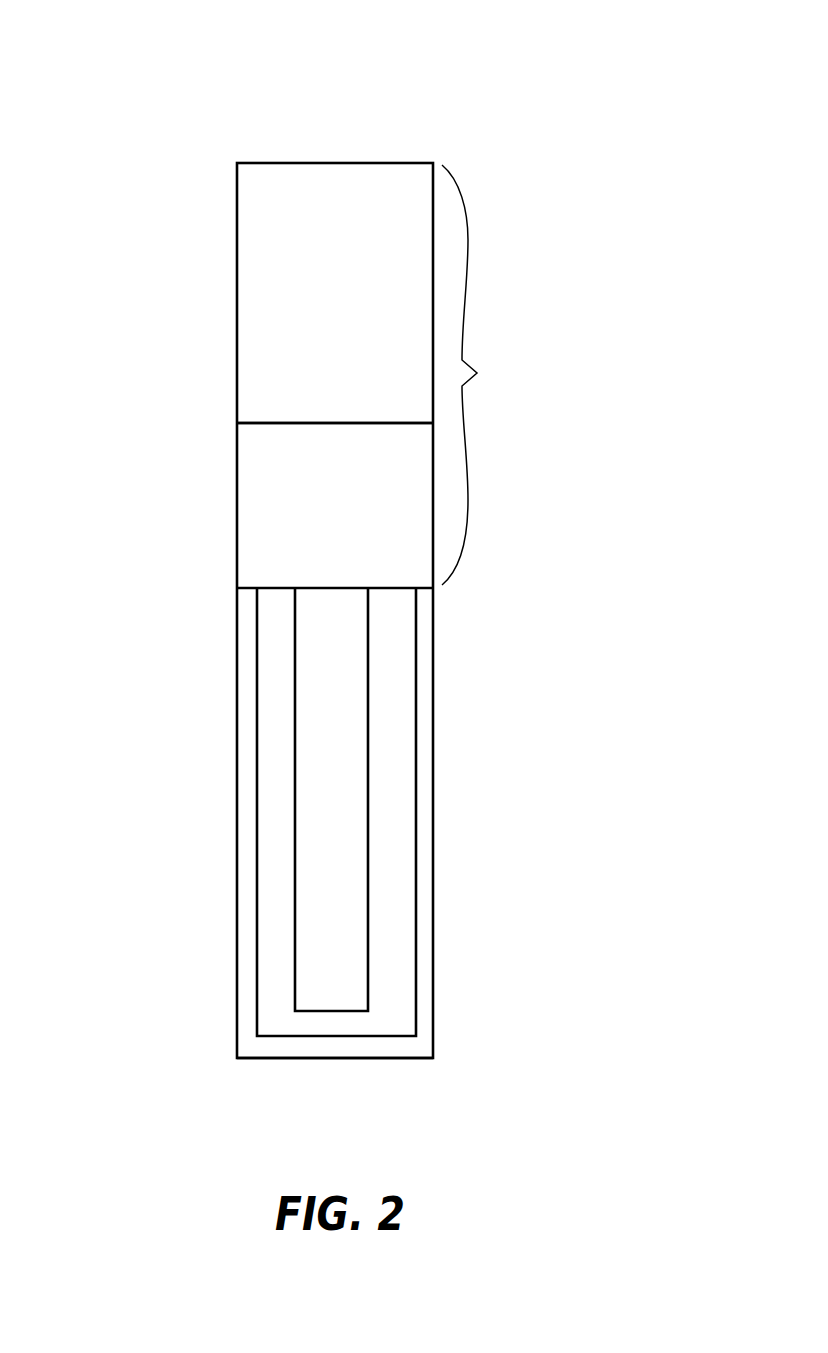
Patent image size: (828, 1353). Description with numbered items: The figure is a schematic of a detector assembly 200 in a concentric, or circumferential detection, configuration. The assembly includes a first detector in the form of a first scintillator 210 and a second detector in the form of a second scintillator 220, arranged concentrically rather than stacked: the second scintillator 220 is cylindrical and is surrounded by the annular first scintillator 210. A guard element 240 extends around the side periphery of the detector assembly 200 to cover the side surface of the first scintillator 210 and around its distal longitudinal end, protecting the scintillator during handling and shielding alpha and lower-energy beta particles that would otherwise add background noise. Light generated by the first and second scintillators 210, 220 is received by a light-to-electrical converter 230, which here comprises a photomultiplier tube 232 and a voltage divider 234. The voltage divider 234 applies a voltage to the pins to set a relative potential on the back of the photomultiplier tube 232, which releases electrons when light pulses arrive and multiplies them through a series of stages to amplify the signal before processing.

The detector assembly 200 is at (373, 116).
The first scintillator 210 is at (395, 804).
The second scintillator 220 is at (312, 802).
The light-to-electrical converter 230 is at (386, 375).
The photomultiplier tube 232 is at (357, 519).
The voltage divider 234 is at (357, 309).
The guard element 240 is at (372, 1048).